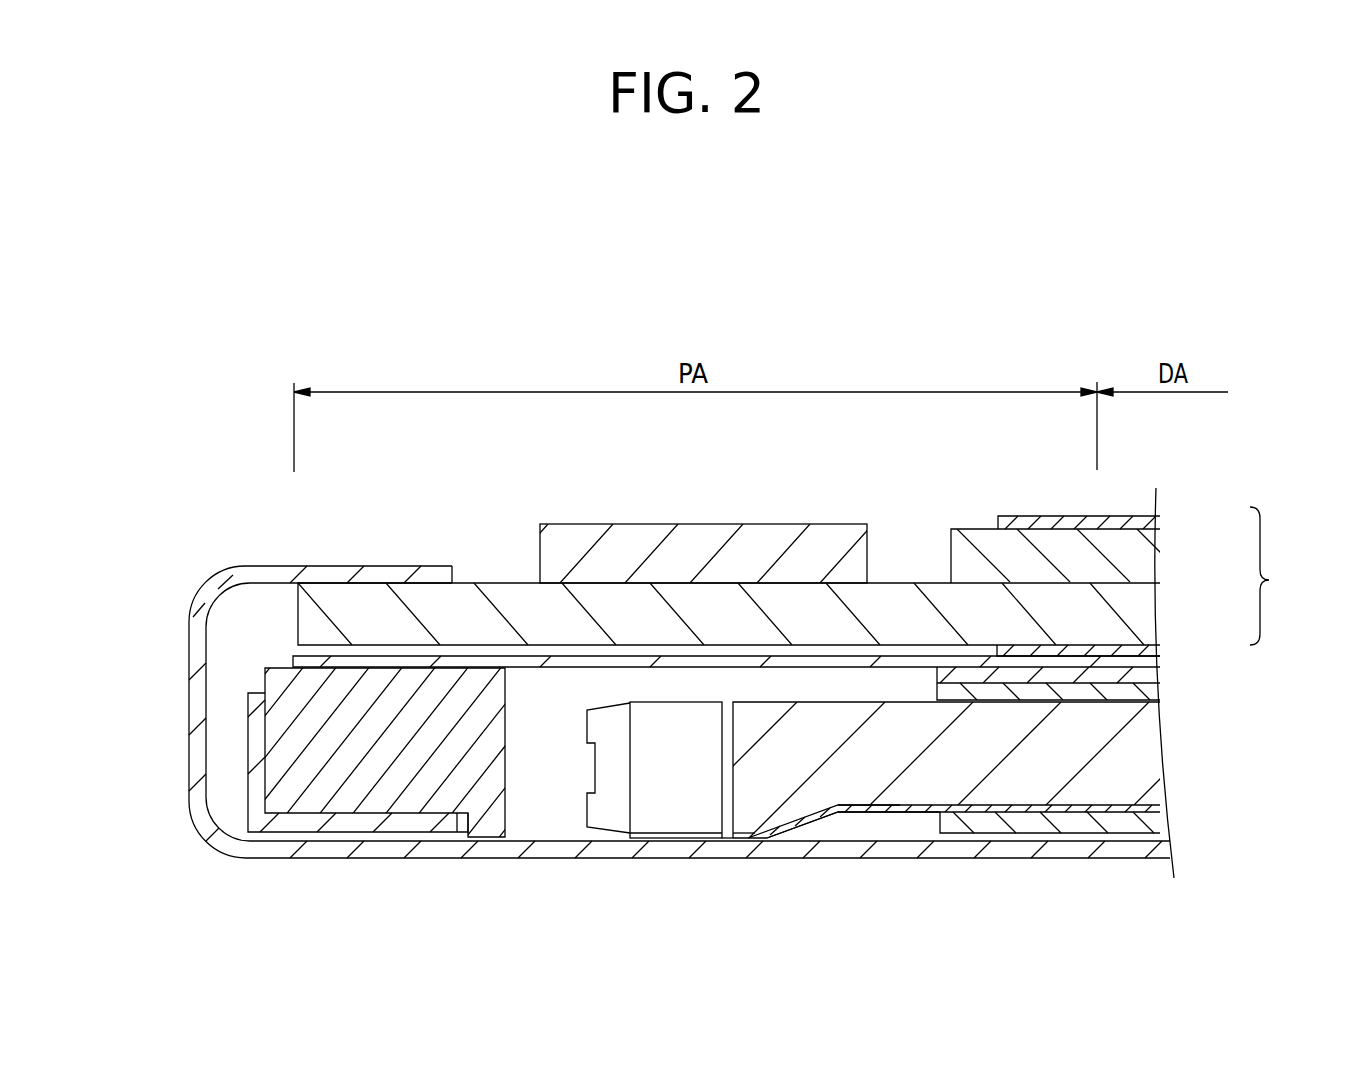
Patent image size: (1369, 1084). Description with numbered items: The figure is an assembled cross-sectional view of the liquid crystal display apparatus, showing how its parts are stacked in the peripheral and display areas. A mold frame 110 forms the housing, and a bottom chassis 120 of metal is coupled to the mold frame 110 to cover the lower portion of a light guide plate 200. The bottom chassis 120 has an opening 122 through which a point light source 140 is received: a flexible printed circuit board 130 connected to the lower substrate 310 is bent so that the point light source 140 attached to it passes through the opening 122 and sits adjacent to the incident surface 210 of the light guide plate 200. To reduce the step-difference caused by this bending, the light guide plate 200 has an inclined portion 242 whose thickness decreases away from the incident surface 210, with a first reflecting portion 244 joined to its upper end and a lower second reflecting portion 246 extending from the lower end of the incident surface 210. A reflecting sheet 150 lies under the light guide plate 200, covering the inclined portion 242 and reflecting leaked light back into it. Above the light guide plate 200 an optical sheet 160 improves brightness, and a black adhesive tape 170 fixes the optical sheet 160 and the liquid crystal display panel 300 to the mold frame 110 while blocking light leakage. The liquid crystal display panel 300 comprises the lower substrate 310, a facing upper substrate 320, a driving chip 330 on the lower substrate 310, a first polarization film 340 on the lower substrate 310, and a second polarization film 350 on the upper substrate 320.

The mold frame 110 is at (280, 758).
The bottom chassis 120 is at (998, 826).
The opening 122 is at (926, 828).
The flexible printed circuit board 130 is at (190, 668).
The point light source 140 is at (603, 773).
The reflecting sheet 150 is at (1153, 802).
The optical sheet 160 is at (1150, 692).
The adhesive tape 170 is at (1152, 675).
The light guide plate 200 is at (1145, 755).
The incident surface 210 is at (733, 812).
The inclined portion 242 is at (807, 830).
The first reflecting portion 244 is at (856, 813).
The second reflecting portion 246 is at (747, 836).
The liquid crystal display panel 300 is at (1284, 576).
The lower substrate 310 is at (1140, 605).
The upper substrate 320 is at (1143, 558).
The driving chip 330 is at (703, 535).
The first polarization film 340 is at (1147, 648).
The second polarization film 350 is at (1157, 523).